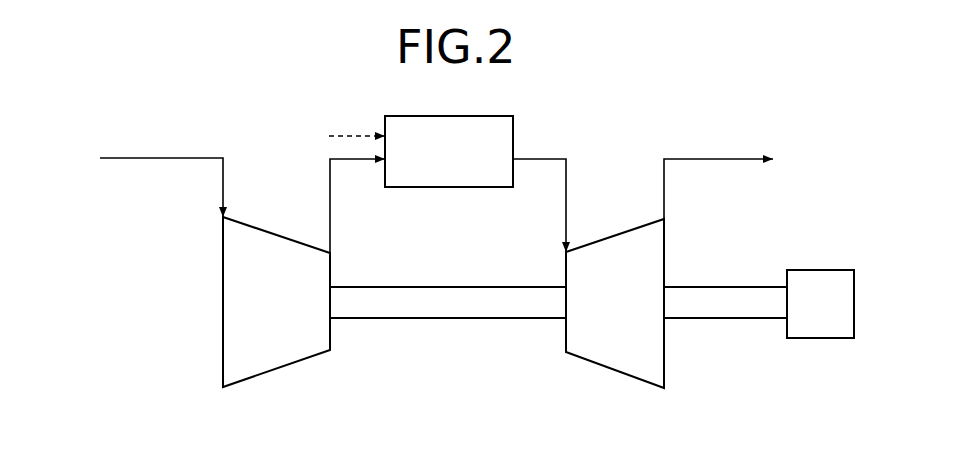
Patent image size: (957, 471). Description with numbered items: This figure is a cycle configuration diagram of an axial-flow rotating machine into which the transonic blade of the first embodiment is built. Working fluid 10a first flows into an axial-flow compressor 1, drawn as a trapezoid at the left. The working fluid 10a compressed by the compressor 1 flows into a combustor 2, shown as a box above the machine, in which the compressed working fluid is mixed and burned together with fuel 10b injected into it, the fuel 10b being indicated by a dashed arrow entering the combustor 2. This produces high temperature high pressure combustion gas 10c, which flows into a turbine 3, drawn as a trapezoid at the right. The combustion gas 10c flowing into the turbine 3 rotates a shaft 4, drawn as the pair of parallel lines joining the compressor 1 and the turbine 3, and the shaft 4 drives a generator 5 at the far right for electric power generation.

The axial-flow compressor 1 is at (276, 302).
The combustor 2 is at (448, 184).
The turbine 3 is at (615, 303).
The shaft 4 is at (448, 303).
The generator 5 is at (759, 304).
The working fluid 10a is at (135, 180).
The fuel 10b is at (332, 136).
The combustion gas 10c is at (718, 173).